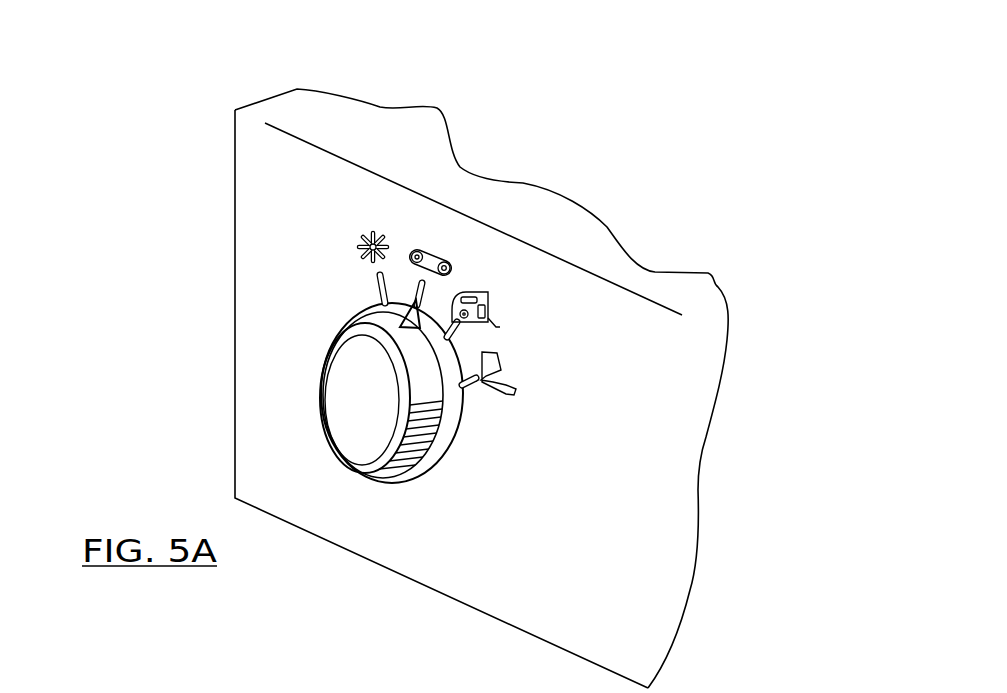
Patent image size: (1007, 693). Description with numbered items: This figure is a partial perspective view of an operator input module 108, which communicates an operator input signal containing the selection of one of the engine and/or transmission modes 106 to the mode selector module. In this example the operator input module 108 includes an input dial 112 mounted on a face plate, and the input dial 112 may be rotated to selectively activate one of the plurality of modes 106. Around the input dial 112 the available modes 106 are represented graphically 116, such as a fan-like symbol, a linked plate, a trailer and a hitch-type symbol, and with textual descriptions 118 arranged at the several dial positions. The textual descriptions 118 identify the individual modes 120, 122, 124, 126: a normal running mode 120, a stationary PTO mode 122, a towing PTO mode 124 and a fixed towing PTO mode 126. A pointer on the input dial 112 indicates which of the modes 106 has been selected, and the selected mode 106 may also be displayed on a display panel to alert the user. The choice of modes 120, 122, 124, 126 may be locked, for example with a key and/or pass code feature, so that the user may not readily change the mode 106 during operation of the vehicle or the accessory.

The mode 106 is at (716, 75).
The operator input module 108 is at (743, 511).
The input dial 112 is at (368, 417).
The graphical representation 116 is at (351, 222).
The textual description 118 is at (124, 96).
The mode 120 is at (357, 242).
The mode 122 is at (428, 250).
The mode 124 is at (472, 292).
The mode 126 is at (507, 370).